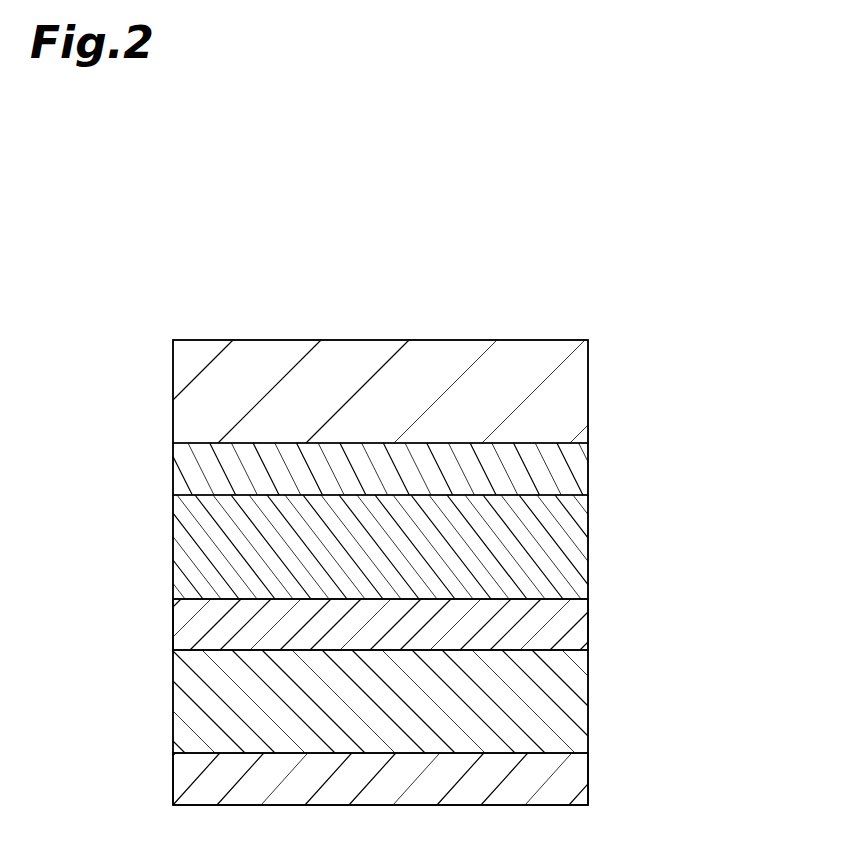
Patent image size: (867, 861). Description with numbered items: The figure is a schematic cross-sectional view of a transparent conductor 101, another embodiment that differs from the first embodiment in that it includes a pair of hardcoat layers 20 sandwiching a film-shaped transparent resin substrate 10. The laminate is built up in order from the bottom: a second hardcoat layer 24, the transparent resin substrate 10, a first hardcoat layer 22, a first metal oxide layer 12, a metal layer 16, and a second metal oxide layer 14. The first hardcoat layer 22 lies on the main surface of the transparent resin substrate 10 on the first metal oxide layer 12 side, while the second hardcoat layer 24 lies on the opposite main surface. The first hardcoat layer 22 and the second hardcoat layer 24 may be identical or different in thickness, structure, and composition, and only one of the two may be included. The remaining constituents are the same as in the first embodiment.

The transparent conductor 101 is at (613, 249).
The second metal oxide layer 14 is at (588, 395).
The metal layer 16 is at (588, 470).
The first metal oxide layer 12 is at (588, 552).
The hardcoat layers 20 is at (380, 702).
The first hardcoat layer 22 is at (588, 627).
The transparent resin substrate 10 is at (588, 695).
The second hardcoat layer 24 is at (588, 783).